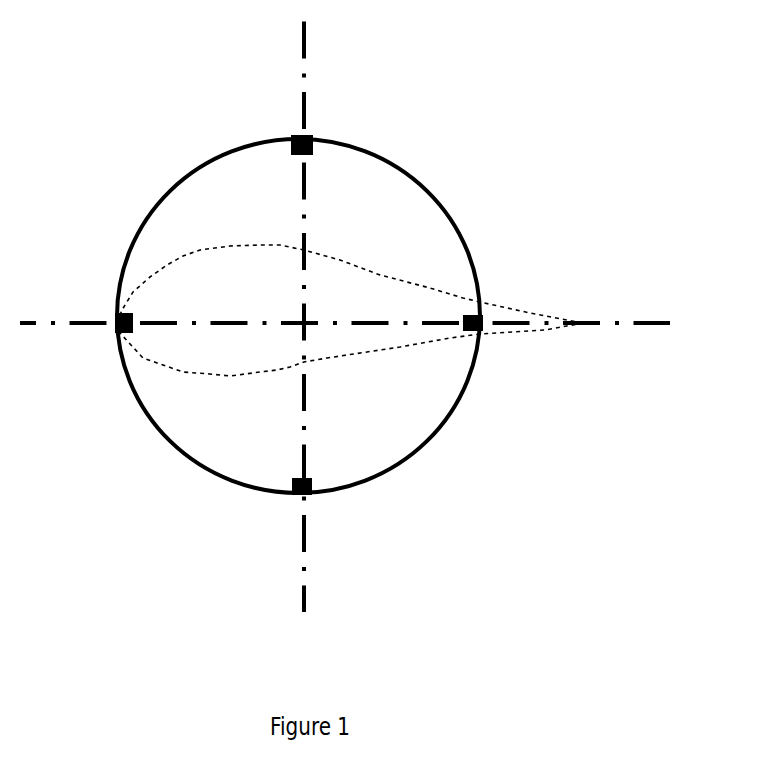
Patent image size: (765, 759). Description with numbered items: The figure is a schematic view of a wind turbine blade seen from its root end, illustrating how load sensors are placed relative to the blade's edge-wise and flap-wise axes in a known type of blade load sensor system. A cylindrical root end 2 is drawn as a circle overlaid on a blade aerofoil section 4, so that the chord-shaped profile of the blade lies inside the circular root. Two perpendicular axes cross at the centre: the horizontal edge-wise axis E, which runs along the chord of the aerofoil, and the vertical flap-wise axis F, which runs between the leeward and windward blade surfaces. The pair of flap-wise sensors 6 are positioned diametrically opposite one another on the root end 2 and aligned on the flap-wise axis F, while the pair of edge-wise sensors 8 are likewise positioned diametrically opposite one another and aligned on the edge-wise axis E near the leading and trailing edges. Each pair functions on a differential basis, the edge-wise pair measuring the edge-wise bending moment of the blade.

The cylindrical root end 2 is at (410, 171).
The blade aerofoil section 4 is at (497, 305).
The flap-wise sensors 6 is at (292, 137).
The edge-wise sensors 8 is at (117, 322).
The edge-wise axis E is at (647, 317).
The flap-wise axis F is at (304, 92).